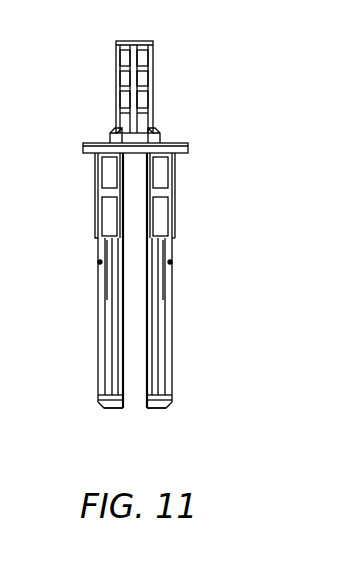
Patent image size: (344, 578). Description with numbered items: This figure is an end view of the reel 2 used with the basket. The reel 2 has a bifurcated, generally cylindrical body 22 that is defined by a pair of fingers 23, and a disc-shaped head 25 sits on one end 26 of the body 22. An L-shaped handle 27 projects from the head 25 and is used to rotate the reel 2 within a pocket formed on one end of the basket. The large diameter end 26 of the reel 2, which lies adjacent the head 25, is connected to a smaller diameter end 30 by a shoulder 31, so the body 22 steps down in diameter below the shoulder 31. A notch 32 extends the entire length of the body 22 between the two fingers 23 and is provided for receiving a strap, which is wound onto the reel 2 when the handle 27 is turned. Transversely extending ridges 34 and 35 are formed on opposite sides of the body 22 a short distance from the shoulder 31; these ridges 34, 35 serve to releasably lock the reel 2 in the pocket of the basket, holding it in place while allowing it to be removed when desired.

The reel 2 is at (79, 377).
The body 22 is at (173, 327).
The fingers 23 is at (105, 347).
The head 25 is at (188, 147).
The end 26 is at (176, 212).
The handle 27 is at (153, 93).
The end 30 is at (168, 405).
The shoulder 31 is at (96, 243).
The notch 32 is at (125, 397).
The ridge 34 is at (107, 272).
The ridge 35 is at (100, 262).